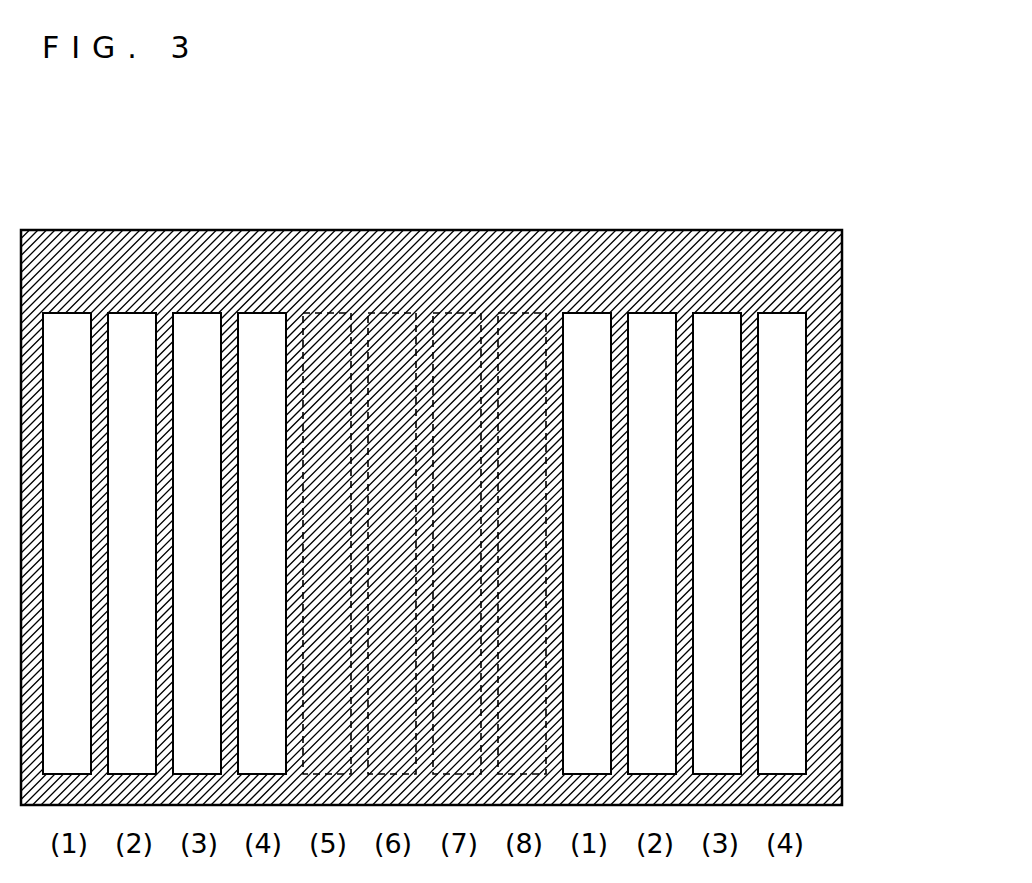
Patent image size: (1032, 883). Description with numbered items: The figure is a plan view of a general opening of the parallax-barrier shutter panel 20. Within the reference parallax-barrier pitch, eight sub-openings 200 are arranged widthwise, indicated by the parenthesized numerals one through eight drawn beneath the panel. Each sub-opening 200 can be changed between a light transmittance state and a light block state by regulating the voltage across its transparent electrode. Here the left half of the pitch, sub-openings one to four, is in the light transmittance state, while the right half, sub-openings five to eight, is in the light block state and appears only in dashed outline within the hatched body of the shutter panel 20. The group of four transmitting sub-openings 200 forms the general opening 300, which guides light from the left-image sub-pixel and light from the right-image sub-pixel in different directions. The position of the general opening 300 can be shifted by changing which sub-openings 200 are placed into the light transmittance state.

The shutter panel 20 is at (833, 470).
The sub-opening 200 is at (593, 330).
The general opening 300 is at (43, 205).